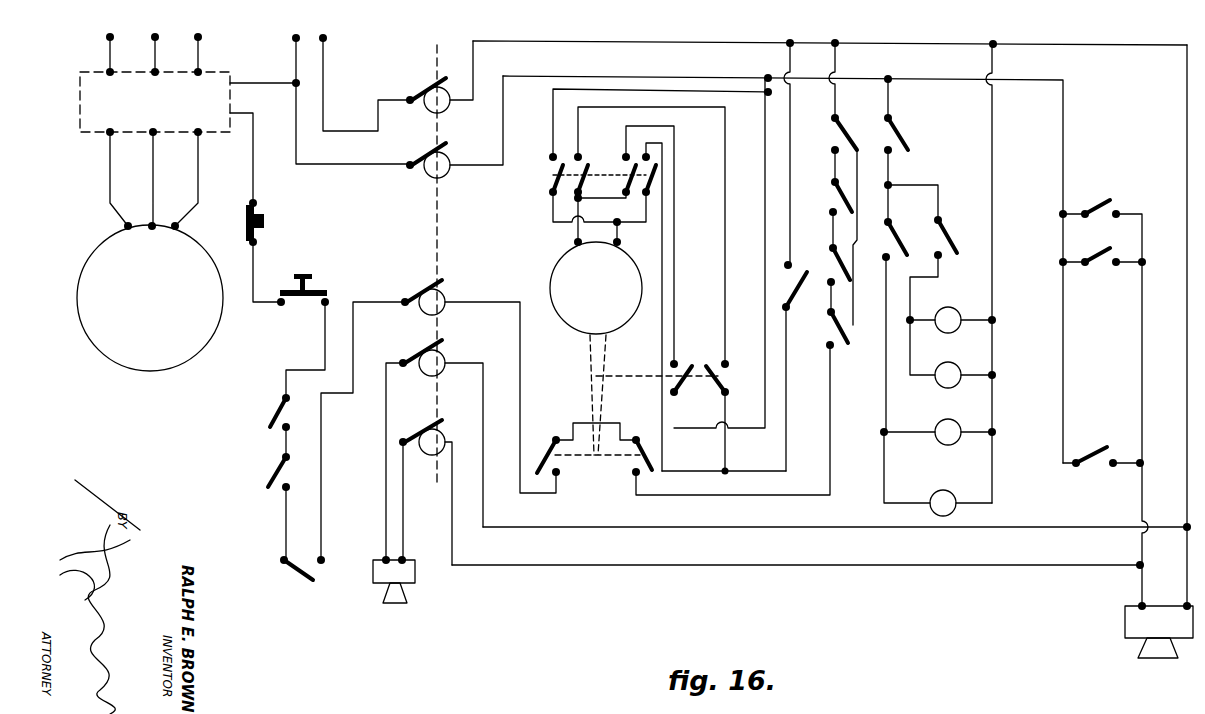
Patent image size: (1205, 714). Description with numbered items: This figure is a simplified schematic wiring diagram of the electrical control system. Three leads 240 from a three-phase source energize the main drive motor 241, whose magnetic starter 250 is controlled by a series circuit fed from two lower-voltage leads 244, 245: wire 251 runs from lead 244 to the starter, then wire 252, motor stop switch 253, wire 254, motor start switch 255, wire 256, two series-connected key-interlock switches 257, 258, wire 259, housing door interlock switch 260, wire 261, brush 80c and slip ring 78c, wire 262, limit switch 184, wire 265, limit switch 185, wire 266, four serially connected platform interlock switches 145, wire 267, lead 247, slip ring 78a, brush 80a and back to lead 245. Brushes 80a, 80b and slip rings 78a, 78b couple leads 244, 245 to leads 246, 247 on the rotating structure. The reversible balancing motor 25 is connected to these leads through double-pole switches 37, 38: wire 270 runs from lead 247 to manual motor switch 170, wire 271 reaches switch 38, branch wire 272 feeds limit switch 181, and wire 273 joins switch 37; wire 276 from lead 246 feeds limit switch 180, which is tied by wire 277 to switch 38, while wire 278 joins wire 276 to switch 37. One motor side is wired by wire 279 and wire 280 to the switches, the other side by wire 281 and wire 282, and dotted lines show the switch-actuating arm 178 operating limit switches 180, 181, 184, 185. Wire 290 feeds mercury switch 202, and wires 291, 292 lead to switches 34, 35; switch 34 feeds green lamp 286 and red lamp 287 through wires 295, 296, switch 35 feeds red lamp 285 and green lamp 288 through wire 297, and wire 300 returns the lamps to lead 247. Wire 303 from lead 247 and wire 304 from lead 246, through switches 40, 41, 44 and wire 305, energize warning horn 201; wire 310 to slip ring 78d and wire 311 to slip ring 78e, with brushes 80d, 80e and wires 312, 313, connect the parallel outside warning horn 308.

The leads 240 is at (156, 40).
The magnetic starter 250 is at (80, 128).
The main drive motor 241 is at (108, 352).
The wire 251 is at (278, 80).
The lead 244 is at (294, 52).
The lead 245 is at (325, 44).
The wire 252 is at (252, 167).
The motor stop switch 253 is at (244, 218).
The wire 254 is at (262, 310).
The motor start switch 255 is at (322, 290).
The wire 256 is at (312, 341).
The key-interlock switch 257 is at (280, 402).
The key-interlock switch 258 is at (280, 464).
The wire 259 is at (284, 511).
The housing door interlock switch 260 is at (298, 577).
The wire 261 is at (322, 472).
The brush 80a is at (425, 88).
The slip ring 78a is at (447, 110).
The brush 80b is at (425, 155).
The slip ring 78b is at (447, 175).
The brush 80c is at (420, 290).
The slip ring 78c is at (443, 312).
The brush 80d is at (416, 350).
The slip ring 78d is at (440, 373).
The brush 80e is at (416, 428).
The slip ring 78e is at (440, 436).
The wire 262 is at (490, 298).
The wire 312 is at (385, 512).
The wire 313 is at (404, 512).
The second warning horn 308 is at (410, 598).
The lead 247 is at (712, 36).
The lead 246 is at (602, 76).
The wire 267 is at (840, 75).
The wire 278 is at (552, 129).
The wire 277 is at (680, 238).
The wire 273 is at (723, 298).
The wire 276 is at (764, 108).
The double-pole switch 37 is at (550, 183).
The wire 282 is at (597, 200).
The double-pole switch 38 is at (622, 200).
The wire 279 is at (556, 208).
The wire 281 is at (566, 236).
The wire 280 is at (625, 228).
The balancing motor 25 is at (570, 318).
The switch-actuating arm 178 is at (588, 372).
The limit switch 180 is at (684, 393).
The limit switch 181 is at (729, 378).
The branch wire 272 is at (724, 450).
The wire 271 is at (788, 386).
The limit switch 184 is at (548, 445).
The limit switch 185 is at (652, 435).
The wire 265 is at (600, 424).
The wire 266 is at (698, 496).
The wire 310 is at (844, 534).
The wire 311 is at (746, 566).
The wire 270 is at (805, 97).
The manual motor switch 170 is at (800, 272).
The platform interlock switches 145 is at (857, 242).
The wire 290 is at (890, 97).
The mercury switch 202 is at (904, 134).
The wire 291 is at (892, 163).
The wire 292 is at (925, 187).
The switch 34 is at (898, 240).
The switch 35 is at (954, 240).
The wire 297 is at (911, 296).
The wire 296 is at (900, 436).
The red lamp 285 is at (950, 333).
The green lamp 288 is at (950, 388).
The red lamp 287 is at (949, 445).
The wire 295 is at (884, 478).
The green lamp 286 is at (957, 512).
The wire 300 is at (995, 146).
The wire 303 is at (1185, 180).
The wire 304 is at (1065, 330).
The switch 40 is at (1094, 204).
The switch 41 is at (1088, 252).
The switch 44 is at (1088, 452).
The wire 305 is at (1138, 513).
The warning horn 201 is at (1124, 630).